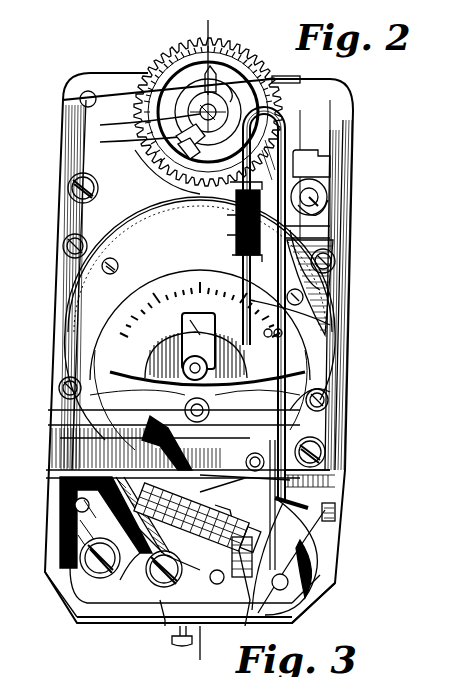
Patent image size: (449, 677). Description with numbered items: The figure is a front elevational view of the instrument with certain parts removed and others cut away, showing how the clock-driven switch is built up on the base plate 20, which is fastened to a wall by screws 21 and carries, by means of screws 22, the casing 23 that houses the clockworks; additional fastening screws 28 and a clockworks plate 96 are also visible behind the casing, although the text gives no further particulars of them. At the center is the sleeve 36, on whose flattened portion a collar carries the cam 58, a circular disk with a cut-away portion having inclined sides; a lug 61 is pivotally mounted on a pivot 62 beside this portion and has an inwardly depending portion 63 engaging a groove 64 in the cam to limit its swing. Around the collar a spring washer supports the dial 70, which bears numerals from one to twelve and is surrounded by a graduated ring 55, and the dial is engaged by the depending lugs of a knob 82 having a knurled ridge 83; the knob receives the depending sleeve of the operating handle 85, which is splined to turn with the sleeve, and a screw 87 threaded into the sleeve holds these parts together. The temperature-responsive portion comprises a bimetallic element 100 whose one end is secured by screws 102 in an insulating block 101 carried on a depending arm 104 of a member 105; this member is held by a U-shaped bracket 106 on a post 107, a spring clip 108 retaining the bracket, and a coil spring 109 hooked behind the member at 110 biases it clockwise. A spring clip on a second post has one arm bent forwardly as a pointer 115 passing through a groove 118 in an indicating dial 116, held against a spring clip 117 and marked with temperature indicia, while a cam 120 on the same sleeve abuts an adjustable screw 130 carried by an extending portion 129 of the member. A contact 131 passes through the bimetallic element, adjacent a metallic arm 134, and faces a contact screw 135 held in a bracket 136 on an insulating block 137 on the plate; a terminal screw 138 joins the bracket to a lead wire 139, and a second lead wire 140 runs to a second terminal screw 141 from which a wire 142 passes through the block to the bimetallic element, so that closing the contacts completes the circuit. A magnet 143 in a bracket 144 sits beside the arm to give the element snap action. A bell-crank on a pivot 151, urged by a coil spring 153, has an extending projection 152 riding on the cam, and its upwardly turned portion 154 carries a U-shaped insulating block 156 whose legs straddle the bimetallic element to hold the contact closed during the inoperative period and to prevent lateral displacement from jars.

The base plate 20 is at (335, 100).
The screws 21 is at (68, 188).
The screws 22 is at (63, 247).
The casing 23 is at (88, 306).
The screw 28 is at (116, 260).
The sleeve 36 is at (60, 420).
The graduated disc 55 is at (211, 102).
The cam 58 is at (75, 404).
The lug 61 is at (335, 416).
The pivot 62 is at (60, 438).
The inwardly depending portion 63 is at (300, 343).
The groove 64 is at (300, 325).
The dial 70 is at (100, 358).
The knob 82 is at (290, 330).
The knurled ridge 83 is at (300, 312).
The operating handle 85 is at (125, 320).
The screw 87 is at (180, 345).
The terminal 96 is at (175, 651).
The bimetallic element 100 is at (300, 245).
The insulating block 101 is at (236, 222).
The screws 102 is at (236, 190).
The depending arm 104 is at (159, 172).
The member 105 is at (300, 138).
The U-shaped bracket 106 is at (335, 145).
The post 107 is at (318, 205).
The spring clip 108 is at (325, 180).
The coil spring 109 is at (300, 218).
The hooked end 110 is at (295, 232).
The pointer 115 is at (222, 64).
The indicating dial 116 is at (236, 84).
The spring clip 117 is at (195, 63).
The groove 118 is at (158, 75).
The cam 120 is at (135, 123).
The extending portion 129 is at (268, 72).
The adjustable screw 130 is at (137, 141).
The contact 131 is at (300, 624).
The metallic arm 134 is at (305, 555).
The contact screw 135 is at (184, 645).
The bracket 136 is at (240, 606).
The insulating block 137 is at (80, 590).
The terminal screw 138 is at (158, 600).
The lead wire 139 is at (138, 576).
The second lead wire 140 is at (80, 549).
The second terminal screw 141 is at (88, 560).
The wire 142 is at (60, 470).
The magnet 143 is at (168, 626).
The bracket 144 is at (160, 612).
The pivot 151 is at (336, 482).
The extending projection 152 is at (60, 452).
The coil spring 153 is at (254, 480).
The upwardly turned portion 154 is at (338, 525).
The U-shaped insulating block 156 is at (270, 535).